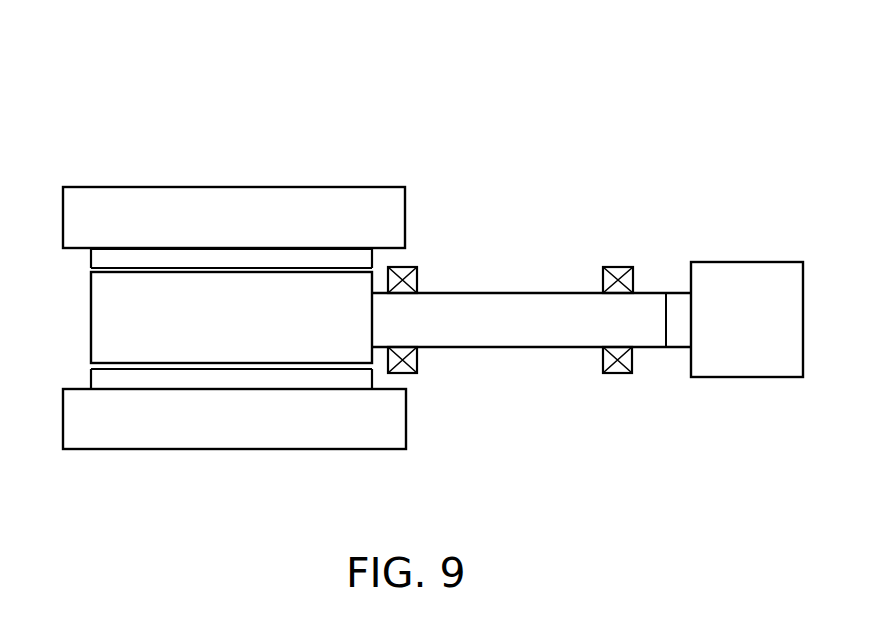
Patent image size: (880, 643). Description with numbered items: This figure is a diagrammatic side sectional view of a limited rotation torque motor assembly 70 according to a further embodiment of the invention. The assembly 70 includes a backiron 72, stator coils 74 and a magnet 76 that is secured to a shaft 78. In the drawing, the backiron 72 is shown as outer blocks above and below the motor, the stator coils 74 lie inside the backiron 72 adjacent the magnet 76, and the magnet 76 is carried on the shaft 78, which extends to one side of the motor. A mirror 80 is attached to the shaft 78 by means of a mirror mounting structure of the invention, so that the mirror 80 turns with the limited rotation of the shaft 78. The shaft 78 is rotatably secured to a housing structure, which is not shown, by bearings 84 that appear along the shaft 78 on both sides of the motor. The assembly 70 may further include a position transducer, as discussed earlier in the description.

The limited rotation torque motor assembly 70 is at (198, 98).
The backiron 72 is at (278, 187).
The stator coils 74 is at (90, 258).
The magnet 76 is at (90, 320).
The shaft 78 is at (535, 348).
The mirror 80 is at (758, 262).
The bearings 84 is at (415, 268).